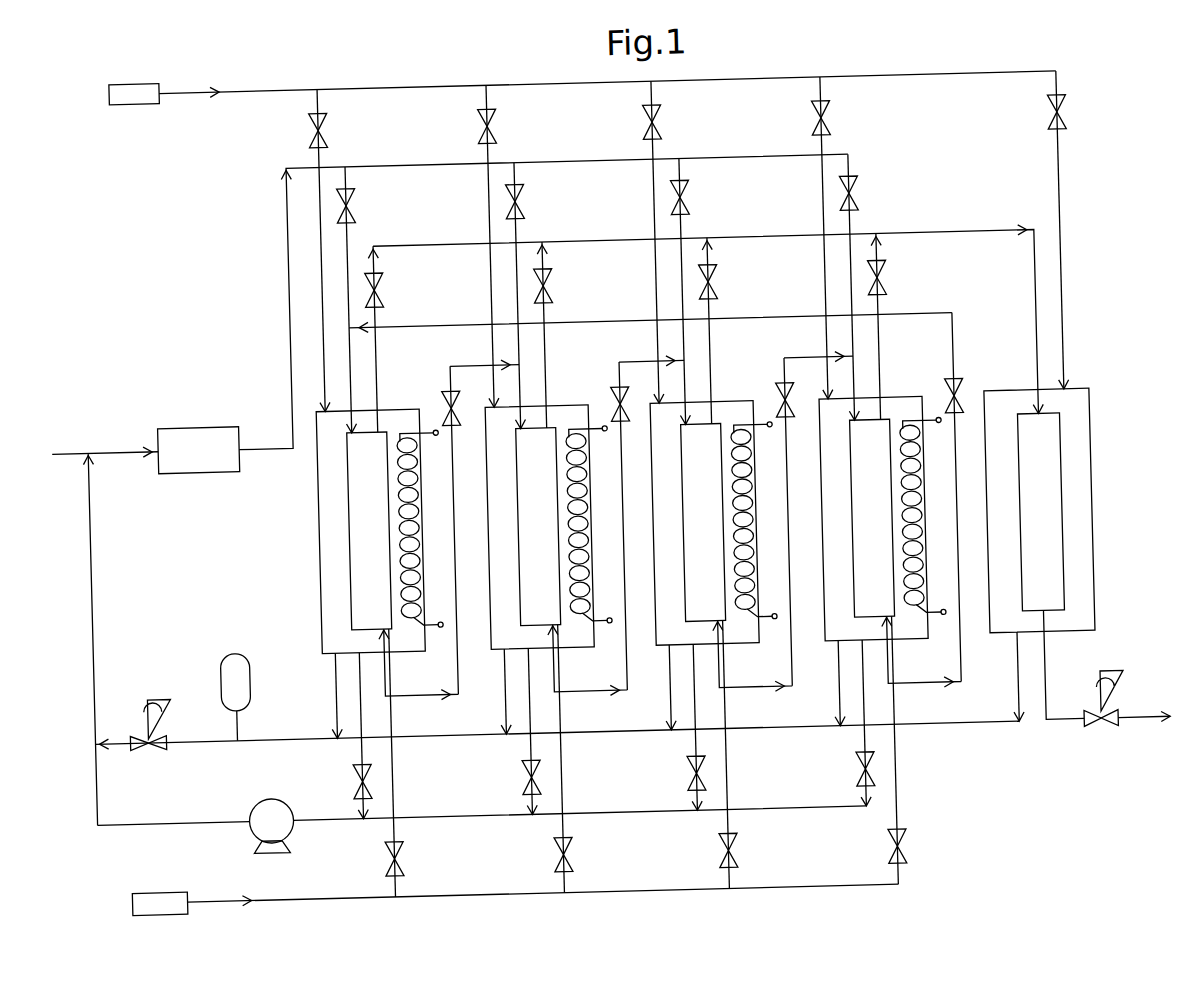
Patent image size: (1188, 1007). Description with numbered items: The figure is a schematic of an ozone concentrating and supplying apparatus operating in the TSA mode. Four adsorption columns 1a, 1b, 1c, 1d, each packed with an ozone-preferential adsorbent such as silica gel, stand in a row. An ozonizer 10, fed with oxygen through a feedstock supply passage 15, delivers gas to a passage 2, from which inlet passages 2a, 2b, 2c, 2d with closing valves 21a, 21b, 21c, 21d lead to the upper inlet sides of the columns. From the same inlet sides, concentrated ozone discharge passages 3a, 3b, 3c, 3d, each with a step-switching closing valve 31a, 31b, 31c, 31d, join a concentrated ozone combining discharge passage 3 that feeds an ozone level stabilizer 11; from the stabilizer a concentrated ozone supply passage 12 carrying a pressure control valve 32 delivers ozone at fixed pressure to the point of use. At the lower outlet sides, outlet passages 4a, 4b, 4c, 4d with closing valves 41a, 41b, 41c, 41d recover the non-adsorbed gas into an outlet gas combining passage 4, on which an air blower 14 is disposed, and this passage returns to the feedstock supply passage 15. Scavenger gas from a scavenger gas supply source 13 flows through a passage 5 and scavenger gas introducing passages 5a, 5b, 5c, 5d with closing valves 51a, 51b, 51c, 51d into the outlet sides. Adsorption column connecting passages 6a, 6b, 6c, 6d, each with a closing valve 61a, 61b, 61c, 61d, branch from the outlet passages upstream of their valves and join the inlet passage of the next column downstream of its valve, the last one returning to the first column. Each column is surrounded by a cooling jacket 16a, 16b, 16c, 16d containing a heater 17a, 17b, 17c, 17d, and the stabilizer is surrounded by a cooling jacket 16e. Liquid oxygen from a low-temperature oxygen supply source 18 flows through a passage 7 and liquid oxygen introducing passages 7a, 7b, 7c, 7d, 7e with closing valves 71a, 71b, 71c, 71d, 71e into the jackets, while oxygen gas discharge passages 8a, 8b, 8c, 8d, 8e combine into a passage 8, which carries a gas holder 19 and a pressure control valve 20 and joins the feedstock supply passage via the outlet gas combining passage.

The adsorption column 1a is at (332, 584).
The adsorption column 1b is at (502, 540).
The adsorption column 1c is at (668, 617).
The adsorption column 1d is at (837, 615).
The passage 2 is at (281, 252).
The inlet passage 2a is at (341, 254).
The inlet passage 2b is at (512, 238).
The inlet passage 2c is at (682, 225).
The inlet passage 2d is at (848, 239).
The closing valve 21a is at (348, 202).
The closing valve 21b is at (514, 201).
The closing valve 21c is at (679, 200).
The closing valve 21d is at (851, 197).
The concentrated ozone combining discharge passage 3 is at (1026, 296).
The concentrated ozone discharge passage 3a is at (369, 327).
The concentrated ozone discharge passage 3b is at (539, 321).
The concentrated ozone discharge passage 3c is at (705, 320).
The concentrated ozone discharge passage 3d is at (874, 320).
The closing valve 31a is at (373, 293).
The closing valve 31b is at (542, 287).
The closing valve 31c is at (707, 286).
The closing valve 31d is at (876, 287).
The outlet gas combining passage 4 is at (174, 828).
The outlet passage 4a is at (340, 716).
The outlet passage 4b is at (509, 726).
The outlet passage 4c is at (675, 728).
The outlet passage 4d is at (844, 722).
The closing valve 41a is at (338, 781).
The closing valve 41b is at (503, 795).
The closing valve 41c is at (668, 800).
The closing valve 41d is at (838, 795).
The passage 5 is at (310, 903).
The scavenger gas introducing passage 5a is at (377, 840).
The scavenger gas introducing passage 5b is at (545, 844).
The scavenger gas introducing passage 5c is at (712, 841).
The scavenger gas introducing passage 5d is at (878, 820).
The closing valve 51a is at (380, 882).
The closing valve 51b is at (551, 878).
The closing valve 51c is at (715, 879).
The closing valve 51d is at (883, 878).
The adsorption column connecting passage 6a is at (446, 642).
The adsorption column connecting passage 6b is at (590, 705).
The adsorption column connecting passage 6c is at (753, 691).
The adsorption column connecting passage 6d is at (944, 667).
The closing valve 61a is at (398, 387).
The closing valve 61b is at (602, 420).
The closing valve 61c is at (768, 412).
The closing valve 61d is at (938, 424).
The passage 7 is at (251, 101).
The liquid oxygen introducing passage 7a is at (320, 110).
The liquid oxygen introducing passage 7b is at (485, 112).
The liquid oxygen introducing passage 7c is at (651, 110).
The liquid oxygen introducing passage 7d is at (820, 108).
The liquid oxygen introducing passage 7e is at (1045, 108).
The closing valve 71a is at (320, 148).
The closing valve 71b is at (486, 147).
The closing valve 71c is at (654, 149).
The closing valve 71d is at (823, 146).
The closing valve 71e is at (1044, 144).
The passage 8 is at (188, 746).
The oxygen gas discharge passage 8a is at (316, 680).
The oxygen gas discharge passage 8b is at (484, 696).
The oxygen gas discharge passage 8c is at (648, 704).
The oxygen gas discharge passage 8d is at (818, 711).
The oxygen gas discharge passage 8e is at (999, 716).
The ozonizer 10 is at (179, 432).
The ozone level stabilizer 11 is at (1049, 477).
The concentrated ozone supply passage 12 is at (1033, 712).
The scavenger gas supply source 13 is at (134, 899).
The air blower 14 is at (250, 809).
The feedstock supply passage 15 is at (102, 451).
The cooling jacket 16a is at (304, 513).
The cooling jacket 16b is at (548, 419).
The cooling jacket 16c is at (712, 419).
The cooling jacket 16d is at (880, 419).
The cooling jacket 16e is at (1000, 415).
The heater 17a is at (410, 650).
The heater 17b is at (580, 640).
The heater 17c is at (745, 640).
The heater 17d is at (914, 640).
The low-temperature oxygen supply source 18 is at (122, 110).
The gas holder 19 is at (208, 663).
The pressure control valve 20 is at (114, 736).
The pressure control valve 32 is at (1079, 751).